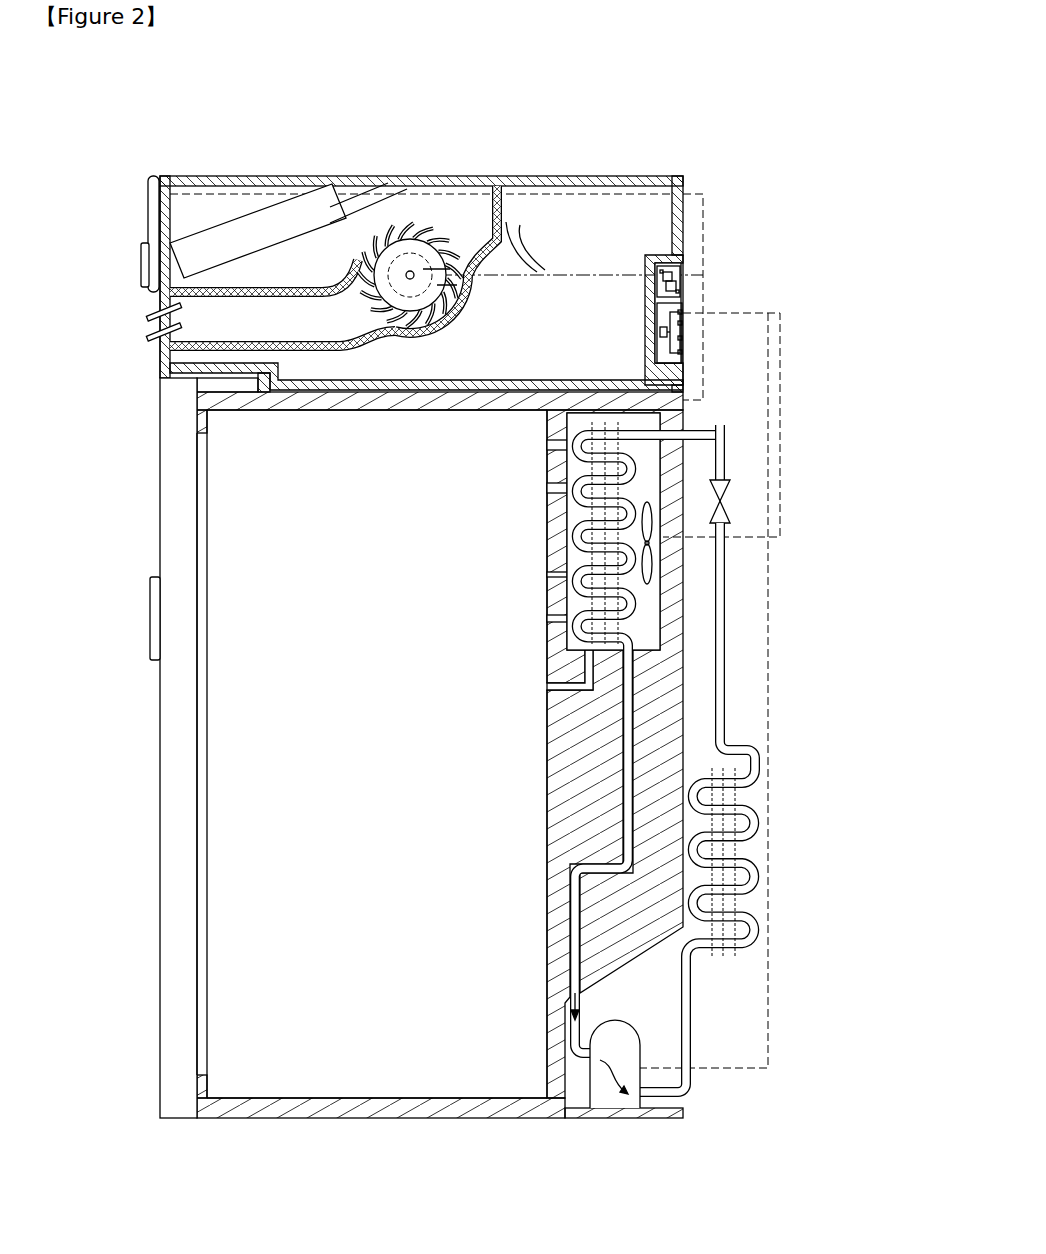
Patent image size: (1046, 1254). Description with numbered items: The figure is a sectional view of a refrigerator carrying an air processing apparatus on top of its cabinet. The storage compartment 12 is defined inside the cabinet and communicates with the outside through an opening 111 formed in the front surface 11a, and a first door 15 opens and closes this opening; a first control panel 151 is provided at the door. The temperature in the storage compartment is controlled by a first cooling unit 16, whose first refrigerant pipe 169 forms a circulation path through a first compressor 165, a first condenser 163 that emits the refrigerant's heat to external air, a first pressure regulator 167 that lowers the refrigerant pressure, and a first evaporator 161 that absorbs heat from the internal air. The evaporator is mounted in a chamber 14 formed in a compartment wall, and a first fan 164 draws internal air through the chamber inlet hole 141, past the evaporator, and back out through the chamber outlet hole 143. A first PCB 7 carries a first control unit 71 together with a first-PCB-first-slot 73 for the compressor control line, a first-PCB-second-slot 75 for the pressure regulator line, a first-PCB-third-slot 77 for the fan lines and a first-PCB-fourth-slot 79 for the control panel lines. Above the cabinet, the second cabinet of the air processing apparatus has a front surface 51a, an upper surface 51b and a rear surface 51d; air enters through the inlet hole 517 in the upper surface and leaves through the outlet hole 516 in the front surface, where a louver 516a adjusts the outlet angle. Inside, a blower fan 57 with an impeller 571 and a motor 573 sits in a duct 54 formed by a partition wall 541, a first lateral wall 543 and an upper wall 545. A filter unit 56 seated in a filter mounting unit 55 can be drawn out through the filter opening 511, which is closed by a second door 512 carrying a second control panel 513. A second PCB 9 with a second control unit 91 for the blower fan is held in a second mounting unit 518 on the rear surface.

The first PCB 7 is at (665, 353).
The second PCB 9 is at (667, 281).
The second control unit 91 is at (673, 273).
The front surface 11a is at (203, 1090).
The storage compartment 12 is at (236, 703).
The chamber 14 is at (573, 463).
The first door 15 is at (180, 762).
The first cooling unit 16 is at (729, 765).
The front surface 51a is at (166, 213).
The upper surface 51b is at (655, 178).
The rear surface 51d is at (680, 218).
The duct 54 is at (363, 108).
The filter mounting unit 55 is at (343, 220).
The filter unit 56 is at (270, 235).
The blower fan 57 is at (502, 108).
The first control unit 71 is at (680, 327).
The first-PCB-first-slot 73 is at (680, 313).
The first-PCB-second-slot 75 is at (680, 352).
The first-PCB-third-slot 77 is at (680, 305).
The first-PCB-fourth-slot 79 is at (680, 340).
The opening 111 is at (203, 992).
The chamber inlet hole 141 is at (555, 685).
The chamber outlet hole 143 is at (555, 533).
The first control panel 151 is at (150, 618).
The first evaporator 161 is at (623, 490).
The first condenser 163 is at (737, 953).
The first fan 164 is at (652, 567).
The first compressor 165 is at (714, 1040).
The first pressure regulator 167 is at (735, 507).
The first refrigerant pipe 169 is at (723, 617).
The filter opening 511 is at (165, 247).
The second door 512 is at (152, 190).
The second control panel 513 is at (142, 265).
The outlet hole 516 is at (148, 328).
The louver 516a is at (148, 314).
The inlet hole 517 is at (222, 178).
The second mounting unit 518 is at (683, 300).
The partition wall 541 is at (487, 258).
The first lateral wall 543 is at (450, 269).
The upper wall 545 is at (347, 317).
The impeller 571 is at (520, 225).
The motor 573 is at (506, 222).